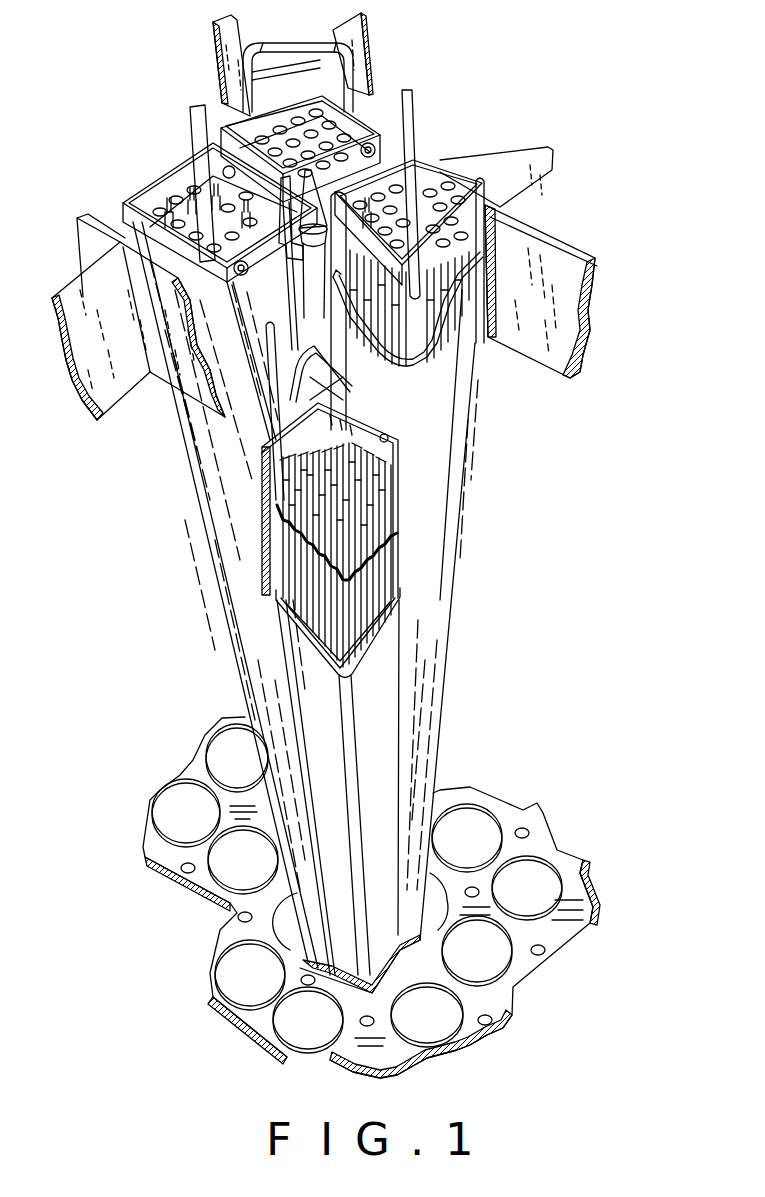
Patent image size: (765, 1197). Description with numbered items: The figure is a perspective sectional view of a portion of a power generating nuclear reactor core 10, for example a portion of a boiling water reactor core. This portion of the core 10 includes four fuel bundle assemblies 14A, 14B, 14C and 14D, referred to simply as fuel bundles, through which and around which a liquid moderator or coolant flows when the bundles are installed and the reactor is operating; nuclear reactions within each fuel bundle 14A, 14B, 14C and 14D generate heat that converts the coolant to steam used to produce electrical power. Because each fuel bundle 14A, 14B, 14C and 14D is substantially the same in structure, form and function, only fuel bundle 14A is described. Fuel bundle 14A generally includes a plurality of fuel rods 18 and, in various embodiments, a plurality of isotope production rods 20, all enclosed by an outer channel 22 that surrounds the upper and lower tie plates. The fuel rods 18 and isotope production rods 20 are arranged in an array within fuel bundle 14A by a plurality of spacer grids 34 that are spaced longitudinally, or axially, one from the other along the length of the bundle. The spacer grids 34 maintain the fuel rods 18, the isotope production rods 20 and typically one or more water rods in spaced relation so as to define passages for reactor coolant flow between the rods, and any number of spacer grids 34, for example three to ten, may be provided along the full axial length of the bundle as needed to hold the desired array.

The power generating nuclear reactor core 10 is at (650, 580).
The fuel bundle assembly 14A is at (372, 742).
The fuel bundle assembly 14B is at (487, 397).
The fuel bundle assembly 14C is at (373, 97).
The fuel bundle assembly 14D is at (190, 484).
The fuel rods 18 is at (345, 460).
The isotope production rods 20 is at (305, 570).
The outer channel 22 is at (336, 733).
The spacer grids 34 is at (310, 568).